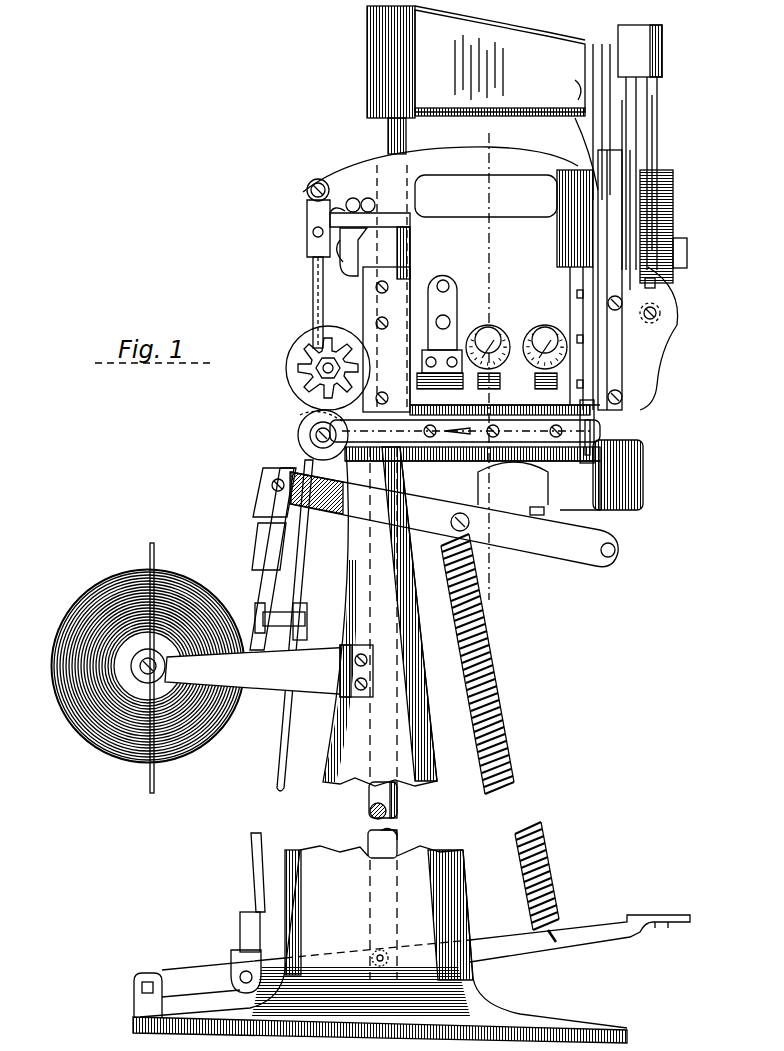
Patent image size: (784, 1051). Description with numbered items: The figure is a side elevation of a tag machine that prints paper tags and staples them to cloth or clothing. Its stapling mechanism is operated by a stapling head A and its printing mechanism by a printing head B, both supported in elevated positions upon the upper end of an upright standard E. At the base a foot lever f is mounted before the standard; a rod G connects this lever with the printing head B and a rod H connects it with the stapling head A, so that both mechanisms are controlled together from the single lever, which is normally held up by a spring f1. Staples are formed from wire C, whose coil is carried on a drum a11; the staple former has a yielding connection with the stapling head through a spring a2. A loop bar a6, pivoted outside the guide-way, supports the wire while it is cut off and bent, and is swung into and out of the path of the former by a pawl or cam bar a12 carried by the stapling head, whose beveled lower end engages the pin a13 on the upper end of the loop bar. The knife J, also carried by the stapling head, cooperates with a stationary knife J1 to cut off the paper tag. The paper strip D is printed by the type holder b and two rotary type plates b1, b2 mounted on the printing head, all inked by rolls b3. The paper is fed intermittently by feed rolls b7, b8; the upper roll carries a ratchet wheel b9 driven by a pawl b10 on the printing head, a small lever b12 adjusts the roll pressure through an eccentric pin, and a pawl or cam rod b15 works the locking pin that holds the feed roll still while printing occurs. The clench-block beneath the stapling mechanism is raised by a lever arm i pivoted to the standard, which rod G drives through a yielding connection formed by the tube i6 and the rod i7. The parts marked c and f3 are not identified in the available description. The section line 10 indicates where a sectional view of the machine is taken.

The stapling head A is at (543, 42).
The spring a2 is at (612, 143).
The pawl or cam bar a12 is at (643, 128).
The knife J is at (600, 176).
The wire C is at (593, 188).
The roll or drum a11 is at (662, 180).
The pin a13 is at (656, 284).
The loop-bar a6 is at (660, 380).
The printing head B is at (451, 281).
The type-holder b is at (447, 320).
The inking rolls b3 is at (470, 388).
The rotary type carrying plate b1 is at (499, 338).
The rotary type carrying plate b2 is at (553, 338).
The pawl b10 is at (313, 262).
The pawl or cam rod b15 is at (340, 300).
The ratchet wheel b9 is at (305, 357).
The upper feed roll b7 is at (300, 392).
The lower feed roll b8 is at (296, 434).
The cross bar c is at (507, 423).
The coöperating knife J1 is at (596, 437).
The lever arm i is at (571, 548).
The small lever b12 is at (390, 485).
The tube i6 is at (258, 520).
The strip of paper D is at (256, 545).
The rod i7 is at (262, 604).
The rod G is at (252, 830).
The upright support or standard E is at (408, 707).
The rod H is at (392, 801).
The spring f1 is at (500, 732).
The treadle lever f3 is at (585, 930).
The foot lever f is at (147, 980).
The section line 10— 10 is at (500, 133).